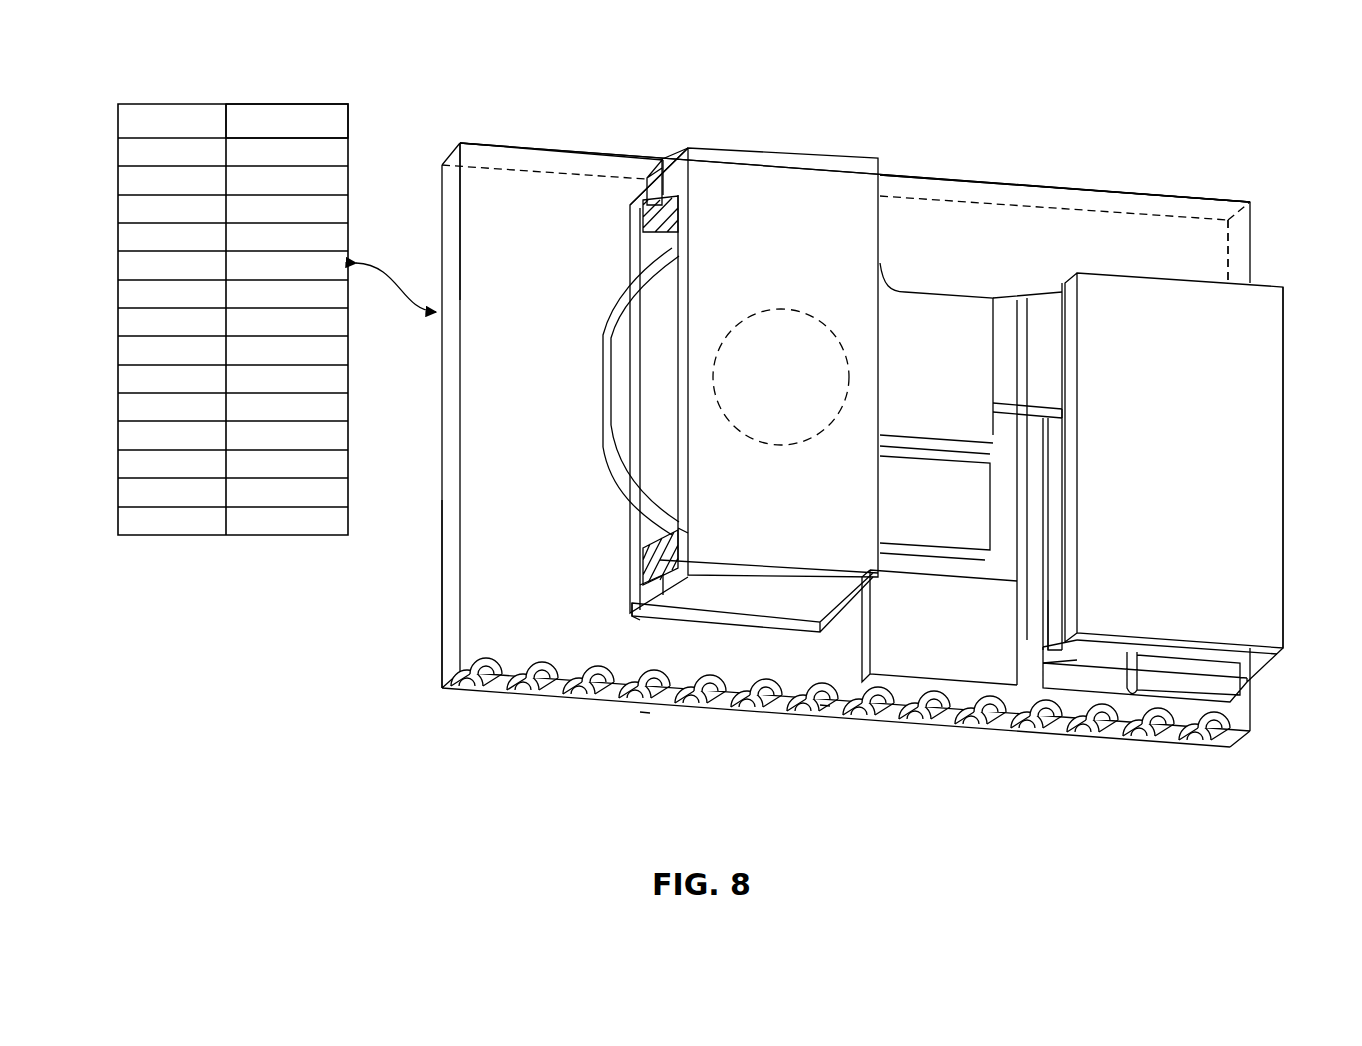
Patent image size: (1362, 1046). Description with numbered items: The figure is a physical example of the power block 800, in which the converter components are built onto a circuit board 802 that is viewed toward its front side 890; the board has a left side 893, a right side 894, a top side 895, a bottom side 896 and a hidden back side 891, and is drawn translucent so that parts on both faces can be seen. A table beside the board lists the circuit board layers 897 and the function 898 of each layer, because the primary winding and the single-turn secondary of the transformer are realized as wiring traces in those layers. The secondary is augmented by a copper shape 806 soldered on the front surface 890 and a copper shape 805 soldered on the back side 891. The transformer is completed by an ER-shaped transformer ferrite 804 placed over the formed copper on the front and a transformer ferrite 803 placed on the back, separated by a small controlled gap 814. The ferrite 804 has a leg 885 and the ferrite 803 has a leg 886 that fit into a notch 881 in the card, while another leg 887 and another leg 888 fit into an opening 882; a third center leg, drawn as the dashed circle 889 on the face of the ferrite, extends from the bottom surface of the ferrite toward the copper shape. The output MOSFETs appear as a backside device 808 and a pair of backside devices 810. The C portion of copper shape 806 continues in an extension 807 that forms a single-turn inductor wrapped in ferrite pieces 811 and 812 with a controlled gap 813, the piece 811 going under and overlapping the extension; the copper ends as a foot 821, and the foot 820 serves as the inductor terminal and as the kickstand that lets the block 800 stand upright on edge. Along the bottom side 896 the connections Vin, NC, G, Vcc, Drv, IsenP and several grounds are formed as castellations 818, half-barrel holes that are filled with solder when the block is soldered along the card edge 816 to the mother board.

The power block 800 is at (895, 110).
The circuit board 802 is at (458, 205).
The transformer ferrite 803 is at (632, 616).
The transformer ferrite 804 is at (800, 245).
The copper shape 805 is at (606, 420).
The copper shape 806 is at (954, 362).
The extension 807 is at (1012, 318).
The backside device 808 is at (939, 624).
The backside devices 810 is at (1033, 468).
The ferrite piece 811 is at (1050, 641).
The ferrite piece 812 is at (1189, 465).
The gap 813 is at (1060, 528).
The gap 814 is at (642, 206).
The edge 816 is at (666, 725).
The castellations 818 is at (718, 683).
The foot 820 is at (1207, 690).
The foot 821 is at (1214, 474).
The notch 881 is at (655, 138).
The opening 882 is at (686, 596).
The leg 885 is at (675, 168).
The leg 886 is at (660, 185).
The leg 887 is at (688, 531).
The leg 888 is at (645, 590).
The core opening 889 is at (800, 392).
The front side 890 is at (530, 477).
The back side 891 is at (428, 396).
The left side 893 is at (446, 540).
The right side 894 is at (1240, 240).
The top side 895 is at (960, 186).
The bottom side 896 is at (836, 718).
The circuit board layers 897 is at (156, 100).
The function 898 is at (306, 100).